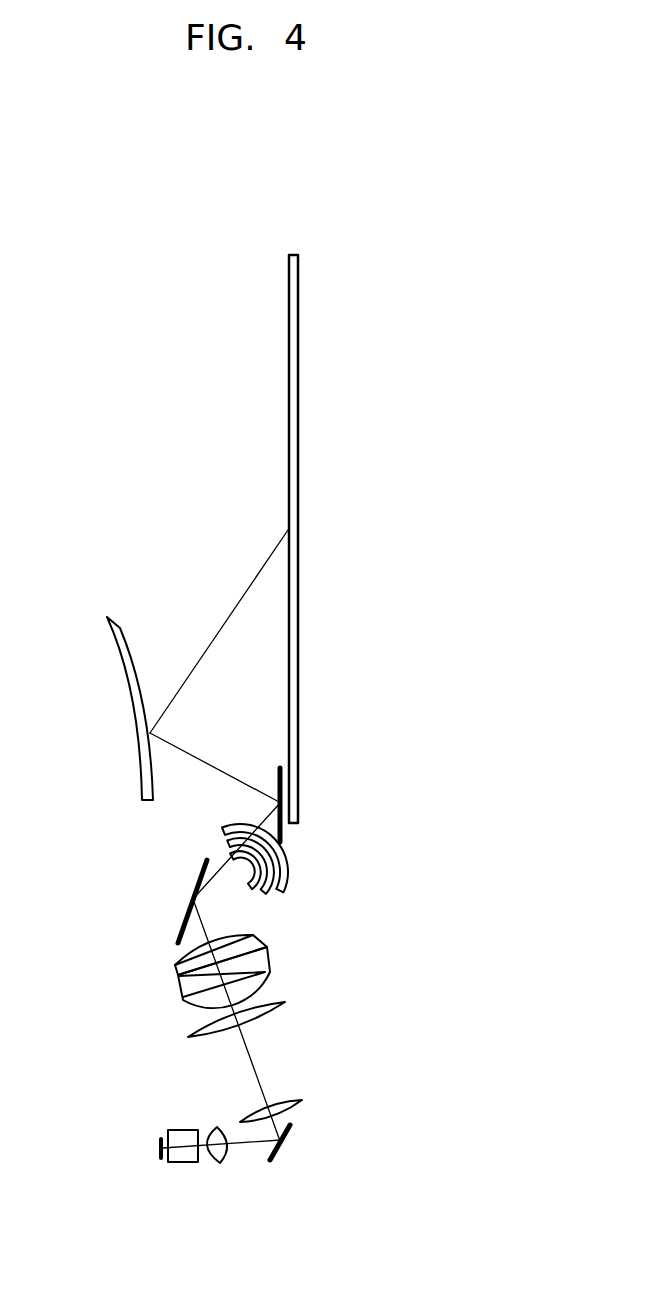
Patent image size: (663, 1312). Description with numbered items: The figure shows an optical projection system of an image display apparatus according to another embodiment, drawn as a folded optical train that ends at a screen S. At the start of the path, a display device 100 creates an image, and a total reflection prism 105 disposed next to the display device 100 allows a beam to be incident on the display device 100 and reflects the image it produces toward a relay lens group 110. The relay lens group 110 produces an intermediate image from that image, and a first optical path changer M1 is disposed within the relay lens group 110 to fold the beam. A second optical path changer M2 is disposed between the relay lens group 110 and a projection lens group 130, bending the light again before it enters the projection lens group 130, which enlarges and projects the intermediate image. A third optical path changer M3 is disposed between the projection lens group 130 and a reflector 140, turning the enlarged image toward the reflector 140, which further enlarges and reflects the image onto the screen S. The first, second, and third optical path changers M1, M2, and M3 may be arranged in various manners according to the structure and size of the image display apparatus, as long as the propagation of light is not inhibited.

The screen S is at (298, 643).
The reflector 140 is at (132, 700).
The third optical path changer M3 is at (283, 806).
The projection lens group 130 is at (252, 804).
The second optical path changer M2 is at (180, 930).
The relay lens group 110 is at (196, 1116).
The display device 100 is at (162, 1158).
The total reflection prism 105 is at (183, 1162).
The first optical path changer M1 is at (277, 1155).